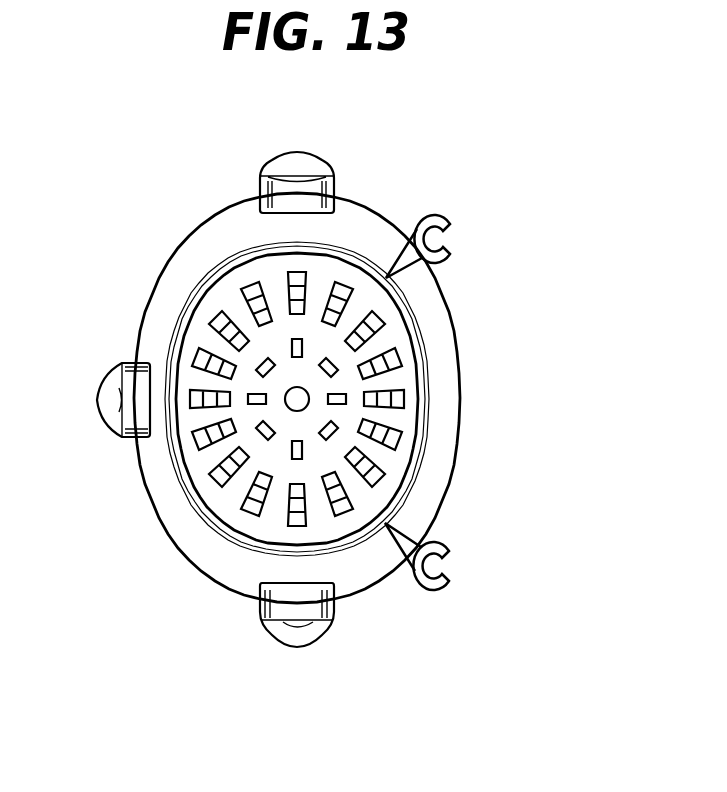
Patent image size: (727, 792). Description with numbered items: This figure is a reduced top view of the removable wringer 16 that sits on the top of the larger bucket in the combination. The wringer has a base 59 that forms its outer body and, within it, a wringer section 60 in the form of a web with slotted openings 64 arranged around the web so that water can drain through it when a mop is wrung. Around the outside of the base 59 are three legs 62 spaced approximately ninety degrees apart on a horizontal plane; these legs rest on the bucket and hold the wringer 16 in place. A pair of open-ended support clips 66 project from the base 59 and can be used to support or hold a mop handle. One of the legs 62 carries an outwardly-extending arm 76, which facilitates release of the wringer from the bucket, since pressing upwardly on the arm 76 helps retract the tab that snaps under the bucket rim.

The removable wringer 16 is at (383, 583).
The base 59 is at (160, 272).
The wringer section 60 is at (215, 263).
The legs 62 is at (334, 185).
The slotted openings 64 is at (377, 320).
The open-ended support clips 66 is at (447, 220).
The outwardly-extending arm 76 is at (303, 642).